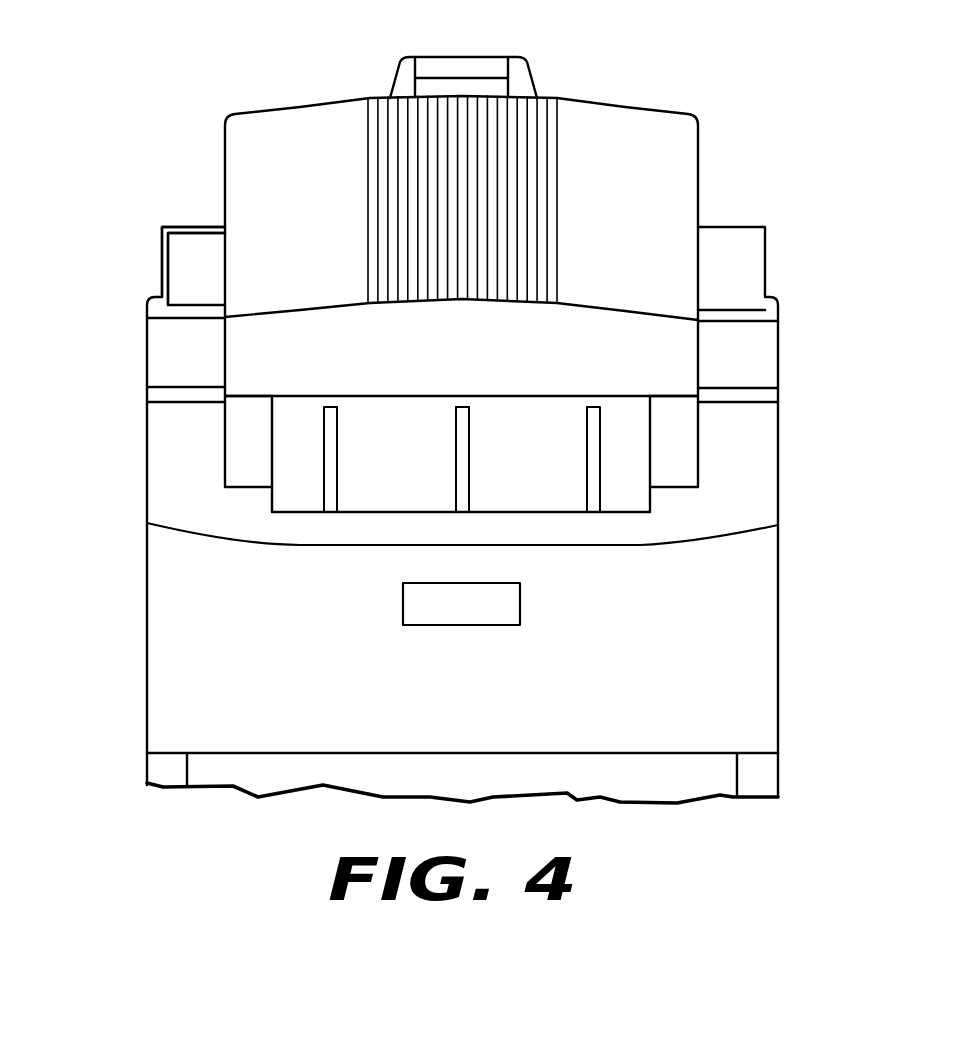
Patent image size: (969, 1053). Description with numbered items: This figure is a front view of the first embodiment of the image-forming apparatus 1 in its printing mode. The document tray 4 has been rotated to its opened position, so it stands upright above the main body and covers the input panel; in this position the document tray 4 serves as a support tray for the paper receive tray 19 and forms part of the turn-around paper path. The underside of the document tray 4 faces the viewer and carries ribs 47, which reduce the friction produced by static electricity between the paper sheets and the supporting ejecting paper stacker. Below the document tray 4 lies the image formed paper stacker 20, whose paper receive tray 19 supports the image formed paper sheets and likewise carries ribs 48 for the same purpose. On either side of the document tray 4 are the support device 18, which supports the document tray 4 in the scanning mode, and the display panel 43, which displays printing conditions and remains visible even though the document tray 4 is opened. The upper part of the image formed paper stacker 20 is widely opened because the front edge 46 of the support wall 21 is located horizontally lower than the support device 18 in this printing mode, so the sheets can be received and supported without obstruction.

The image-forming apparatus 1 is at (455, 404).
The document tray 4 is at (461, 246).
The support device 18 is at (255, 394).
The paper receive tray 19 is at (513, 454).
The image formed paper stacker 20 is at (437, 510).
The support wall 21 is at (148, 648).
The display panel 43 is at (202, 242).
The front edge 46 is at (302, 533).
The ribs 47 is at (380, 107).
The ribs 48 is at (468, 442).